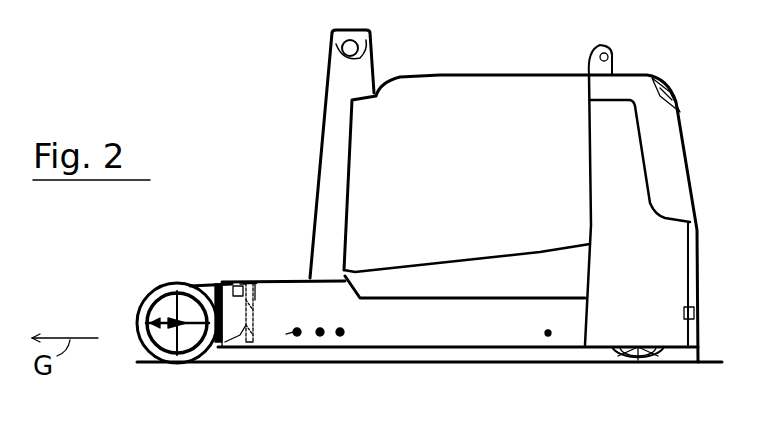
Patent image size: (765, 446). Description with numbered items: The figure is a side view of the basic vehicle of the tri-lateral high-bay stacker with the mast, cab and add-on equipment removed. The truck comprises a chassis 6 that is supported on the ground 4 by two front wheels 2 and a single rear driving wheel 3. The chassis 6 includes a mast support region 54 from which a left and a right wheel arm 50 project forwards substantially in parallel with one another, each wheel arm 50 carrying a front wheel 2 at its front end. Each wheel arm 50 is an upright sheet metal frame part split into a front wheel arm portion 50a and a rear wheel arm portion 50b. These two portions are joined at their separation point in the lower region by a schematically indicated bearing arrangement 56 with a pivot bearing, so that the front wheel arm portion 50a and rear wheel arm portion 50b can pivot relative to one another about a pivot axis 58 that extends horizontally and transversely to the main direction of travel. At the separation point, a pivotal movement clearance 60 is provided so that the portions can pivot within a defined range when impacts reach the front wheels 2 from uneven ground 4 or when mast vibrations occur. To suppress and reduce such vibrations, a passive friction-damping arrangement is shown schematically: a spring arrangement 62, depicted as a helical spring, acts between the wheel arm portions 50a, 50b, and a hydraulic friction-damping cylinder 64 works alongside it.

The front wheel 2 is at (138, 322).
The rear driving wheel 3 is at (636, 364).
The ground 4 is at (713, 364).
The chassis 6 is at (408, 330).
The wheel arm 50 is at (299, 309).
The front wheel arm portion 50a is at (243, 283).
The rear wheel arm portion 50b is at (300, 340).
The mast support region 54 is at (300, 265).
The bearing arrangement 56 is at (264, 328).
The pivot axis 58 is at (233, 340).
The pivotal movement clearance 60 is at (245, 310).
The spring arrangement 62 is at (256, 309).
The hydraulic friction-damping cylinder 64 is at (252, 280).